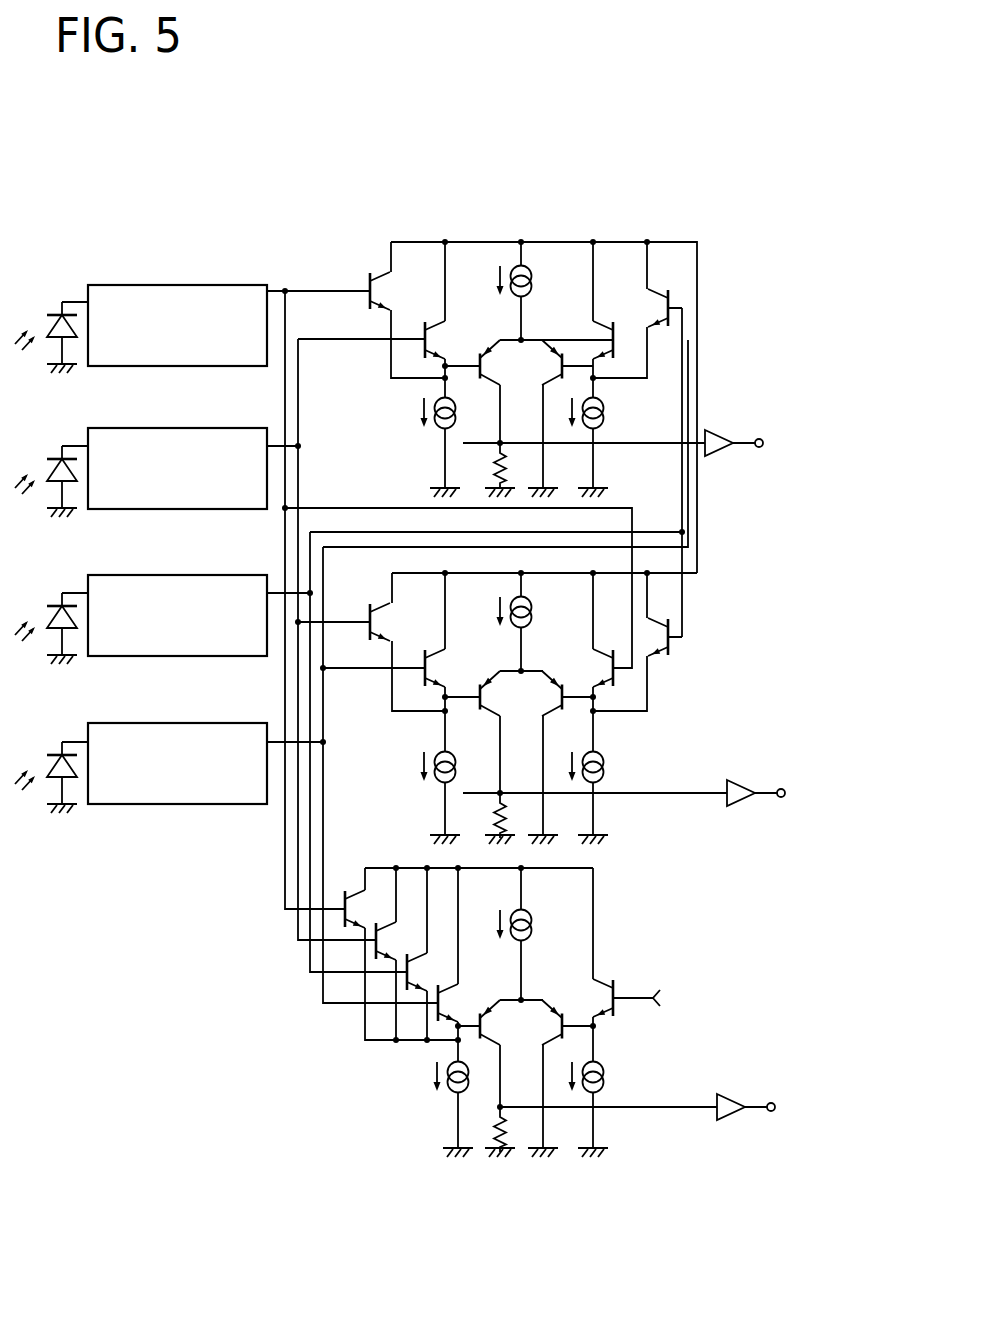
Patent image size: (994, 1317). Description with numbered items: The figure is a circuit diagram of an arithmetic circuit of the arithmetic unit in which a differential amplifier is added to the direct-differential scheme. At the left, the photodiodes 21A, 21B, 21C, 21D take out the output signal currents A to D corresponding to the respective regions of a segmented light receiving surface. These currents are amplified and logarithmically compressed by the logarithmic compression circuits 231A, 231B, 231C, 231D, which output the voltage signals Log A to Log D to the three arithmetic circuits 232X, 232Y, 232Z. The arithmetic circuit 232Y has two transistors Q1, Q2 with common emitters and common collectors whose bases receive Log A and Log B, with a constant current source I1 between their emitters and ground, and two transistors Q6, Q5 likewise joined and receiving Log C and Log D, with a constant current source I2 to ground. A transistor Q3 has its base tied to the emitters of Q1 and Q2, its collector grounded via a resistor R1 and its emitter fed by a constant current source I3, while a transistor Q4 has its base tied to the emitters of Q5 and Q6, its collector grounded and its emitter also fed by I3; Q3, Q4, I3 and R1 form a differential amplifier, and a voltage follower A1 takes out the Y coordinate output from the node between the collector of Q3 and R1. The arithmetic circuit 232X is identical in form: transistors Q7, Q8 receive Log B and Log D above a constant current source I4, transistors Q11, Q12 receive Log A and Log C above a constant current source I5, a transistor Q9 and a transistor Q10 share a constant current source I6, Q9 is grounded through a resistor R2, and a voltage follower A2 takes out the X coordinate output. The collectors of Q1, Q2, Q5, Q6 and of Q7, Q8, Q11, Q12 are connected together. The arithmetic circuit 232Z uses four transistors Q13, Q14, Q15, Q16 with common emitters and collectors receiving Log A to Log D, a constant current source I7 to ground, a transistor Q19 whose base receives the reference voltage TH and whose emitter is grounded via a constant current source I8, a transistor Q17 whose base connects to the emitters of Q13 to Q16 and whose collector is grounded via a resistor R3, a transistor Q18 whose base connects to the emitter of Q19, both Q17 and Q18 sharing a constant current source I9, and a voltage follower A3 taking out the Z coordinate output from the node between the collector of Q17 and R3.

The photodiode 21A is at (53, 313).
The photodiode 21B is at (53, 457).
The photodiode 21C is at (53, 604).
The photodiode 21D is at (53, 753).
The logarithmic compression circuit 231A is at (208, 285).
The logarithmic compression circuit 231B is at (208, 428).
The logarithmic compression circuit 231C is at (208, 575).
The logarithmic compression circuit 231D is at (208, 723).
The arithmetic circuit 232X is at (594, 724).
The arithmetic circuit 232Y is at (597, 406).
The arithmetic circuit 232Z is at (523, 1028).
The transistor Q1 is at (404, 291).
The transistor Q2 is at (454, 340).
The transistor Q3 is at (502, 366).
The transistor Q4 is at (543, 377).
The transistor Q5 is at (578, 340).
The transistor Q6 is at (637, 308).
The transistor Q7 is at (404, 622).
The transistor Q8 is at (454, 668).
The transistor Q9 is at (498, 706).
The transistor Q10 is at (555, 708).
The transistor Q11 is at (598, 666).
The transistor Q12 is at (660, 661).
The transistor Q13 is at (340, 920).
The transistor Q14 is at (372, 952).
The transistor Q15 is at (402, 983).
The transistor Q16 is at (432, 1014).
The transistor Q17 is at (497, 1008).
The transistor Q18 is at (553, 1008).
The transistor Q19 is at (605, 978).
The constant current source I1 is at (458, 413).
The constant current source I2 is at (607, 413).
The constant current source I3 is at (535, 281).
The constant current source I4 is at (458, 767).
The constant current source I5 is at (607, 767).
The constant current source I6 is at (535, 612).
The constant current source I7 is at (450, 1094).
The constant current source I8 is at (608, 1077).
The constant current source I9 is at (535, 925).
The resistor R1 is at (479, 465).
The resistor R2 is at (479, 815).
The resistor R3 is at (493, 1129).
The voltage follower A1 is at (764, 477).
The voltage follower A2 is at (762, 829).
The voltage follower A3 is at (749, 1143).